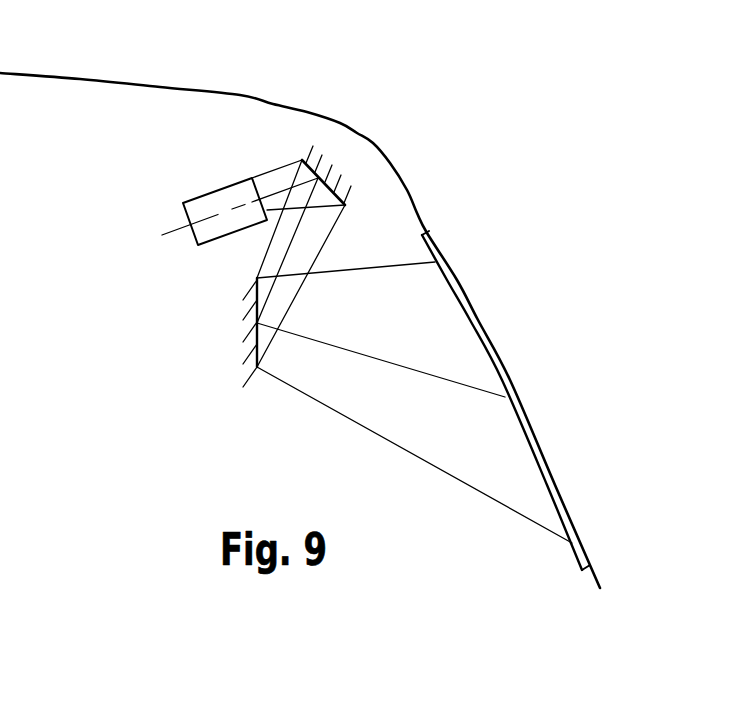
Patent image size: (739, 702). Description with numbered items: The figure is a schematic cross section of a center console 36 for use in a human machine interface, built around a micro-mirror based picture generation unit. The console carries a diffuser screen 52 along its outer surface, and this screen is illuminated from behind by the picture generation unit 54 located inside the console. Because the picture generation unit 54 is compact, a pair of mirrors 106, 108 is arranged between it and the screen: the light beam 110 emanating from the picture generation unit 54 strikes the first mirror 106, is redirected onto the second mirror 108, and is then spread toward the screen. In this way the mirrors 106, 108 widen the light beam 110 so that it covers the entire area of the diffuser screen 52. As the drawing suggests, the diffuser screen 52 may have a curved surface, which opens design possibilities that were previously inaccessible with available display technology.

The vehicle body / windshield 36 is at (425, 155).
The diffuser screen 52 is at (457, 280).
The picture generation unit 54 is at (210, 241).
The mirror 106 is at (311, 161).
The mirror 108 is at (257, 337).
The light beam 110 is at (345, 393).